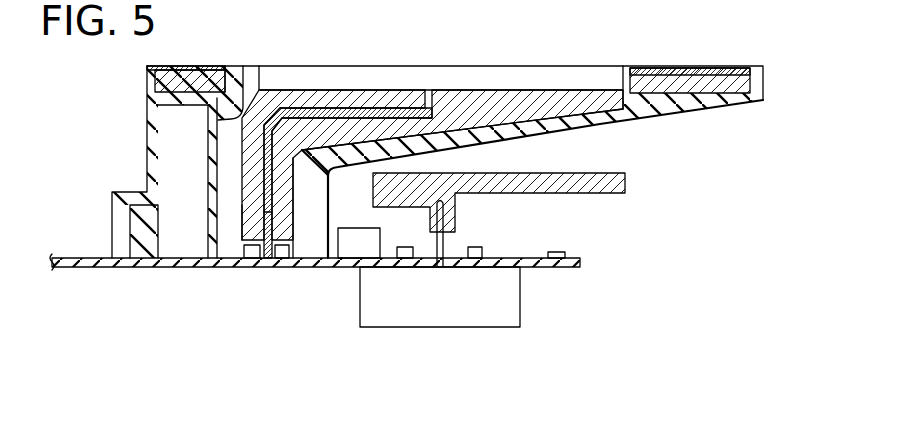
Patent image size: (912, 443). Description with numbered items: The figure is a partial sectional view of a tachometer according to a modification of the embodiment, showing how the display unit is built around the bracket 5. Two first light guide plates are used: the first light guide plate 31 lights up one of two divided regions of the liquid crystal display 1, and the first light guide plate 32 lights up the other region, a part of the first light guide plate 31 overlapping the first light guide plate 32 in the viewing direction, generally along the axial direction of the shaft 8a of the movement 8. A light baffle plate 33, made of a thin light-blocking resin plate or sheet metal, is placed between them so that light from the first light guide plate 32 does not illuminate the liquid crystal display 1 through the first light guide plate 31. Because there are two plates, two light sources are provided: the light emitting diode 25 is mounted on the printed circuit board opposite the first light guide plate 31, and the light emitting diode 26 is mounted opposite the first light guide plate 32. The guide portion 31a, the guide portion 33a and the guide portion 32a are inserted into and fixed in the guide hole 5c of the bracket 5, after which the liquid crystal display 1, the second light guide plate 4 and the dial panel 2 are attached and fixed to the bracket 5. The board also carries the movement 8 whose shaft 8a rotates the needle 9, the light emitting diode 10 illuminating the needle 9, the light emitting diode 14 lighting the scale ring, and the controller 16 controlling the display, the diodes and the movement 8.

The liquid crystal display 1 is at (571, 66).
The dial panel 2 is at (660, 68).
The second light guide plate 4 is at (700, 70).
The bracket 5 is at (766, 84).
The guide hole 5c is at (243, 66).
The movement 8 is at (455, 329).
The shaft 8a is at (433, 263).
The needle 9 is at (598, 194).
The light emitting diode 10 is at (394, 258).
The light emitting diode 14 is at (563, 243).
The controller 16 is at (357, 248).
The light emitting diode 25 is at (282, 257).
The light emitting diode 26 is at (253, 257).
The first light guide plate 31 is at (459, 88).
The guide portion 31a is at (308, 260).
The first light guide plate 32 is at (314, 86).
The guide portion 32a is at (241, 205).
The light baffle plate 33 is at (375, 106).
The guide portion 33a is at (265, 212).